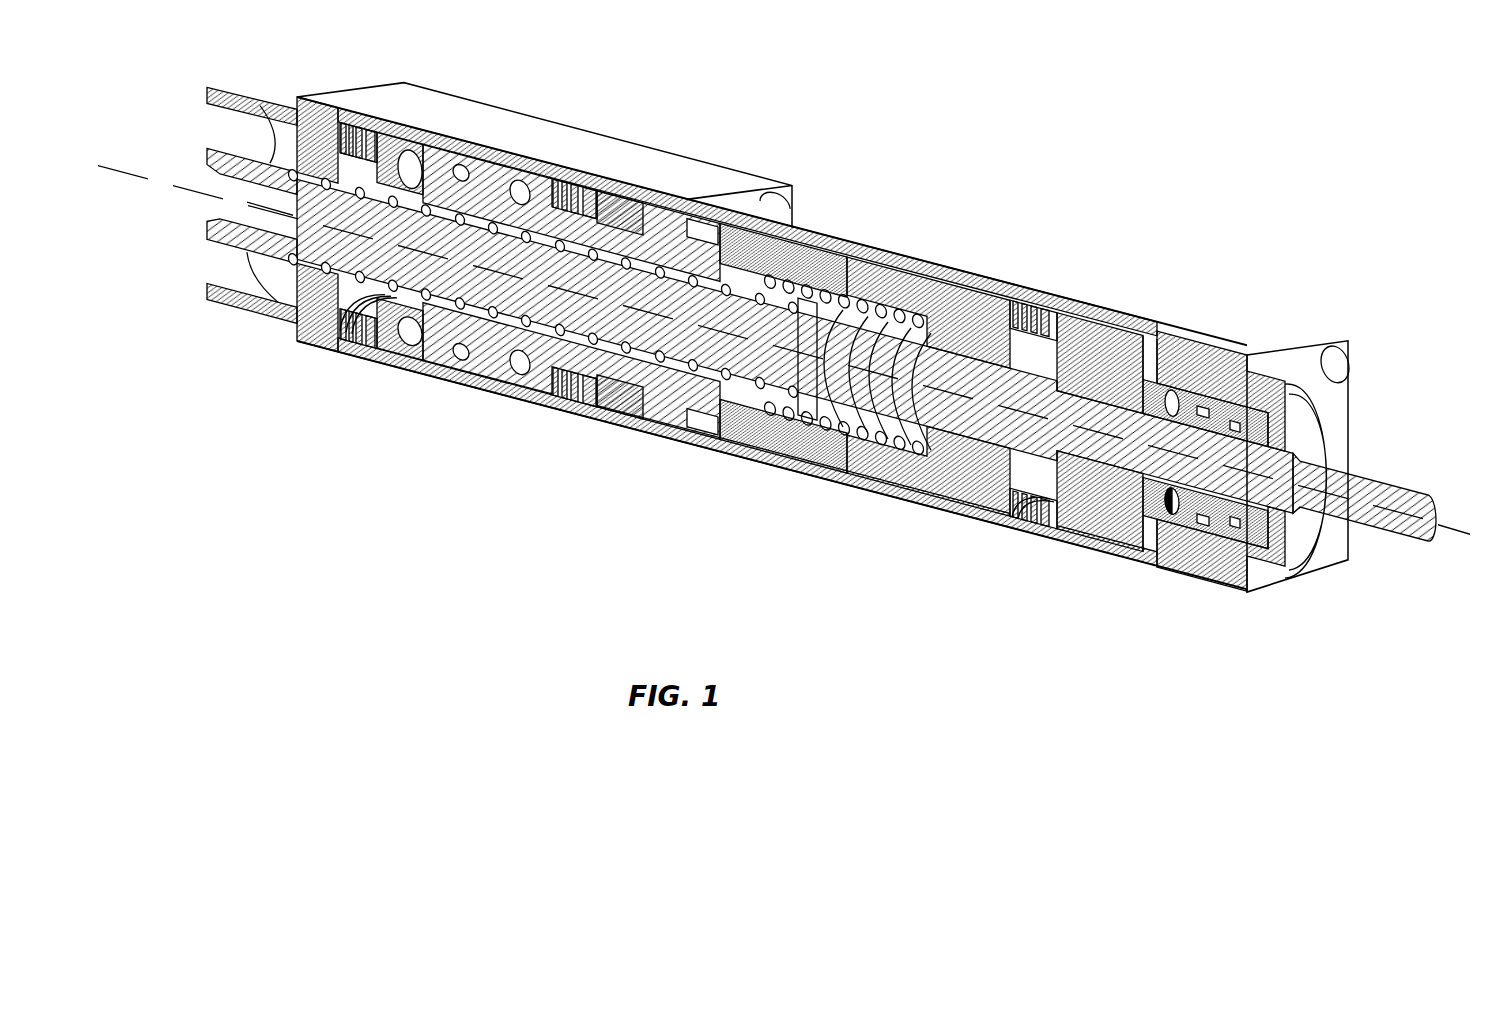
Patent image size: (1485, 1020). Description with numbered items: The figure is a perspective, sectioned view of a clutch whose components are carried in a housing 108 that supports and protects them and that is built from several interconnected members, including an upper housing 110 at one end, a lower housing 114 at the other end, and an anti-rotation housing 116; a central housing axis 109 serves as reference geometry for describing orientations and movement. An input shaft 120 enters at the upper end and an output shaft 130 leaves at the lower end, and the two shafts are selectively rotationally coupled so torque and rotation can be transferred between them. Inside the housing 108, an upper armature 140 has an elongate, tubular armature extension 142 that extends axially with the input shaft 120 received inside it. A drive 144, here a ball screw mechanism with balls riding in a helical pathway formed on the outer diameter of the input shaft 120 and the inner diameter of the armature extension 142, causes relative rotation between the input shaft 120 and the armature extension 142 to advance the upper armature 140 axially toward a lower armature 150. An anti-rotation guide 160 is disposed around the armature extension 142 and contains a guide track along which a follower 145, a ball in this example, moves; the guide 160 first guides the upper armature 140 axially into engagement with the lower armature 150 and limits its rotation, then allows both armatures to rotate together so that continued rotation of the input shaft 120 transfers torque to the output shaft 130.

The housing 108 is at (745, 456).
The central housing axis 109 is at (1450, 527).
The upper housing 110 is at (247, 93).
The lower housing 114 is at (1265, 342).
The anti-rotation housing 116 is at (520, 130).
The input shaft 120 is at (221, 148).
The output shaft 130 is at (1393, 487).
The upper armature 140 is at (795, 258).
The armature extension 142 is at (660, 243).
The drive 144 is at (643, 363).
The follower 145 is at (523, 190).
The lower armature 150 is at (977, 317).
The anti-rotation guide 160 is at (428, 143).